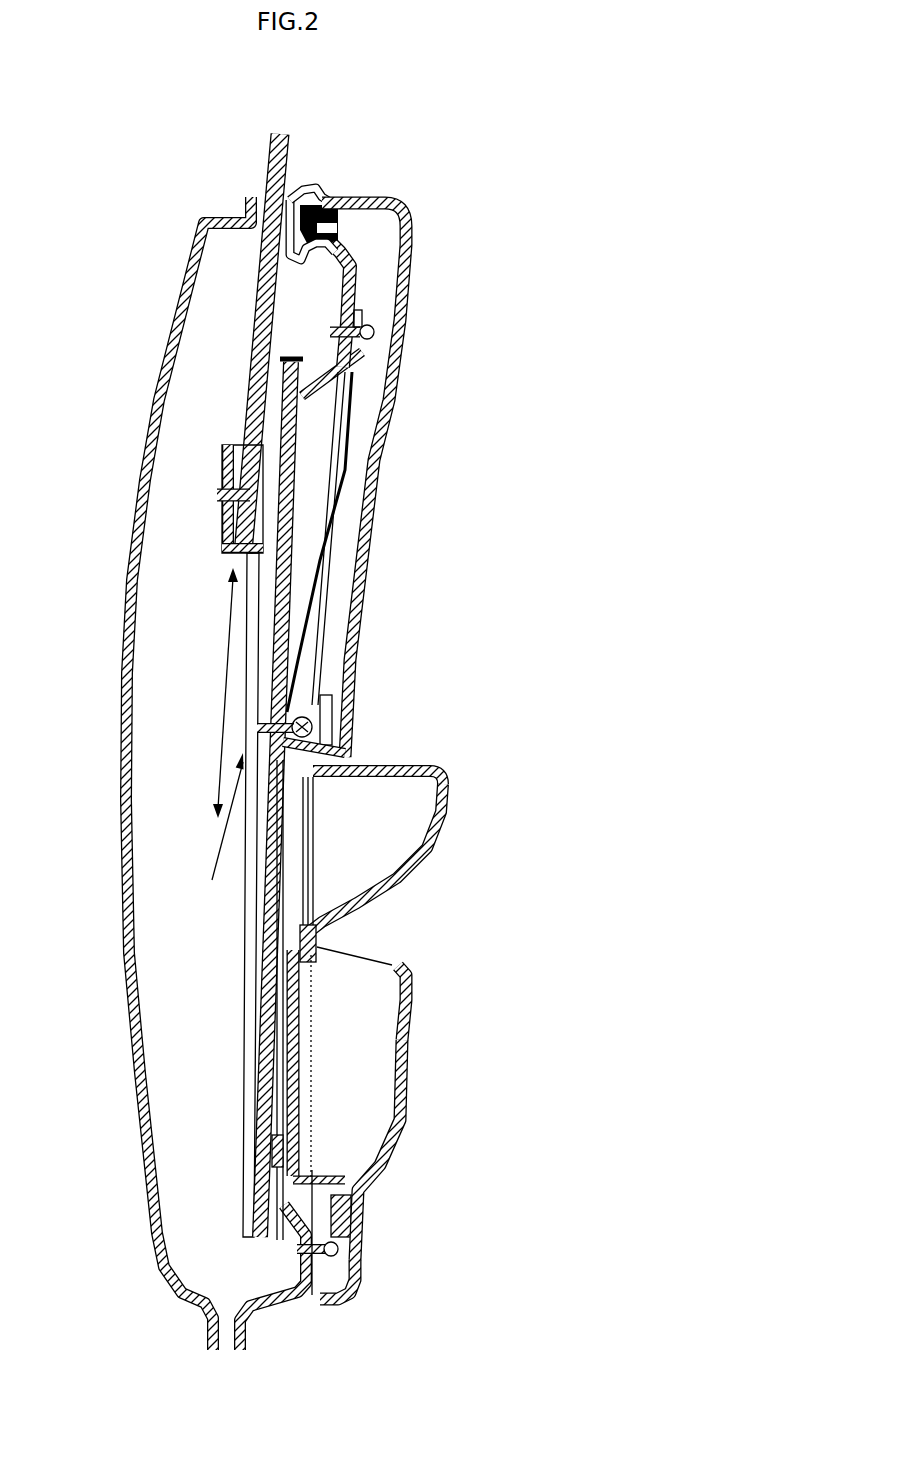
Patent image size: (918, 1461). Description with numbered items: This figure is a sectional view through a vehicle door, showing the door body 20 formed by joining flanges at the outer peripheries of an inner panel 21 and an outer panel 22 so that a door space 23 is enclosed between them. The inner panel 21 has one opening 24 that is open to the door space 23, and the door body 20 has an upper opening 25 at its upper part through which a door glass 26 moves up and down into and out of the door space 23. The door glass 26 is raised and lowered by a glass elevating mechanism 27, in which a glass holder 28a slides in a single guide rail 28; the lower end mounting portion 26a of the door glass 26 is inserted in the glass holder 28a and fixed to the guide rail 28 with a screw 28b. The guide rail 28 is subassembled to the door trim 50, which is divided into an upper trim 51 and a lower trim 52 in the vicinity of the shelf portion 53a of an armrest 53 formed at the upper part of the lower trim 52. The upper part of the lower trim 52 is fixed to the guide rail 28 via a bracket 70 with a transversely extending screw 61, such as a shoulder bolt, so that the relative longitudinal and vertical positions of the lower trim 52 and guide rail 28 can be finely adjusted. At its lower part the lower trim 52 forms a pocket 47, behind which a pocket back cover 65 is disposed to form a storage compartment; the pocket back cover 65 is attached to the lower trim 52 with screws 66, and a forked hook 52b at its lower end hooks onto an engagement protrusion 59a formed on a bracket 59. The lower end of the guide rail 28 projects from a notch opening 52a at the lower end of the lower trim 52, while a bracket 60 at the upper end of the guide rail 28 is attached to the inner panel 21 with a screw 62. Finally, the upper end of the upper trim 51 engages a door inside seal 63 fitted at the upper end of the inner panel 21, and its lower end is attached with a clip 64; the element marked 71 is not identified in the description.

The door body 20 is at (472, 232).
The inner panel 21 is at (358, 300).
The outer panel 22 is at (125, 655).
The door space 23 is at (179, 1075).
The opening 24 is at (340, 403).
The upper opening 25 is at (258, 188).
The door glass 26 is at (290, 146).
The lower end mounting portion 26a is at (228, 470).
The glass elevating mechanism 27 is at (197, 911).
The guide rail 28 is at (262, 660).
The glass holder 28a is at (222, 532).
The screw 28b is at (216, 490).
The pocket 47 is at (412, 1080).
The door trim 50 is at (468, 640).
The upper trim 51 is at (382, 480).
The lower trim 52 is at (425, 985).
The notch opening 52a is at (352, 1278).
The forked hook 52b is at (302, 1107).
The armrest 53 is at (412, 853).
The shelf portion 53a is at (414, 767).
The bracket 59 is at (283, 1210).
The engagement protrusion 59a is at (277, 1150).
The bracket 60 is at (322, 367).
The screw 61 is at (257, 726).
The screw 62 is at (374, 332).
The door inside seal 63 is at (318, 190).
The clip 64 is at (305, 677).
The pocket back cover 65 is at (299, 1045).
The screws 66 is at (293, 932).
The bracket 70 is at (327, 757).
The pin 71 is at (283, 862).